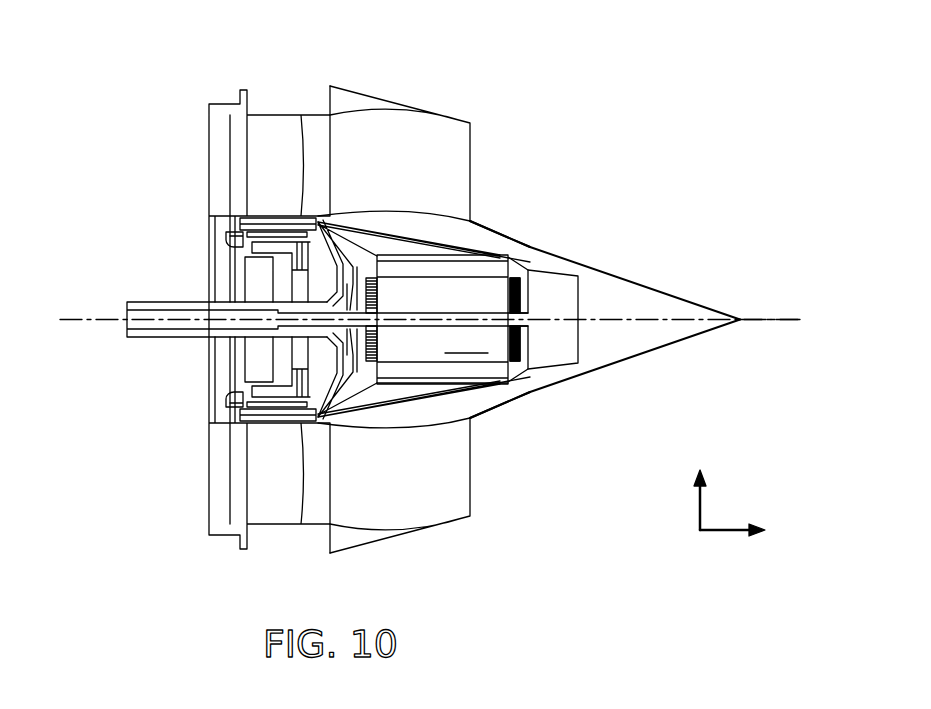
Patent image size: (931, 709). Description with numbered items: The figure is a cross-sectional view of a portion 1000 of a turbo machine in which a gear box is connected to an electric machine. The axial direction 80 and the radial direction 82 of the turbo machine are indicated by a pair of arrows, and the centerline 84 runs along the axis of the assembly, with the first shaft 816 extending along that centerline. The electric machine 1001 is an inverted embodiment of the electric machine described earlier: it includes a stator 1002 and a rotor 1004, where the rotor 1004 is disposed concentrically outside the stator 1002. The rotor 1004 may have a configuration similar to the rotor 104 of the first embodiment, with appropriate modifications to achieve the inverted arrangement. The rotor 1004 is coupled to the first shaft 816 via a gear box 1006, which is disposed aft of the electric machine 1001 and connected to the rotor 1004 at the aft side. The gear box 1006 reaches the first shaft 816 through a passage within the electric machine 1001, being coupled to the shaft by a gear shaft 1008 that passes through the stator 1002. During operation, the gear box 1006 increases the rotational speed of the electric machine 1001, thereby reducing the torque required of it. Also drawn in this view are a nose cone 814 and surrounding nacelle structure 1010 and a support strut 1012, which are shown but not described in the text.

The portion of turbo machine 1000 is at (672, 67).
The first shaft 816 is at (143, 301).
The support strut 1012 is at (356, 254).
The nacelle wall 1010 is at (433, 241).
The electric machine 1001 is at (513, 249).
The nose cone 814 is at (648, 284).
The centerline 84 is at (770, 317).
The rotor 104 is at (467, 340).
The stator 1002 is at (490, 371).
The rotor 1004 is at (462, 384).
The gear box 1006 is at (579, 341).
The gear shaft 1008 is at (362, 323).
The radial direction 82 is at (699, 505).
The axial direction 80 is at (725, 534).